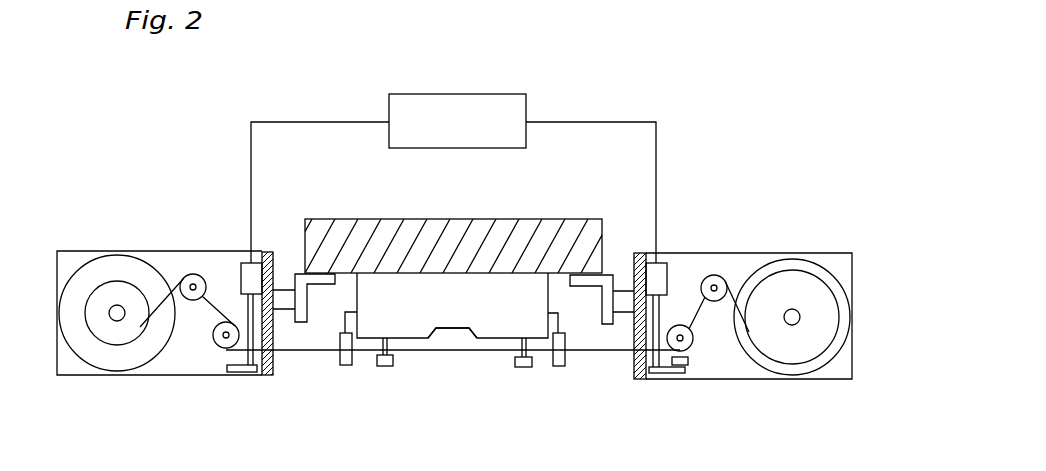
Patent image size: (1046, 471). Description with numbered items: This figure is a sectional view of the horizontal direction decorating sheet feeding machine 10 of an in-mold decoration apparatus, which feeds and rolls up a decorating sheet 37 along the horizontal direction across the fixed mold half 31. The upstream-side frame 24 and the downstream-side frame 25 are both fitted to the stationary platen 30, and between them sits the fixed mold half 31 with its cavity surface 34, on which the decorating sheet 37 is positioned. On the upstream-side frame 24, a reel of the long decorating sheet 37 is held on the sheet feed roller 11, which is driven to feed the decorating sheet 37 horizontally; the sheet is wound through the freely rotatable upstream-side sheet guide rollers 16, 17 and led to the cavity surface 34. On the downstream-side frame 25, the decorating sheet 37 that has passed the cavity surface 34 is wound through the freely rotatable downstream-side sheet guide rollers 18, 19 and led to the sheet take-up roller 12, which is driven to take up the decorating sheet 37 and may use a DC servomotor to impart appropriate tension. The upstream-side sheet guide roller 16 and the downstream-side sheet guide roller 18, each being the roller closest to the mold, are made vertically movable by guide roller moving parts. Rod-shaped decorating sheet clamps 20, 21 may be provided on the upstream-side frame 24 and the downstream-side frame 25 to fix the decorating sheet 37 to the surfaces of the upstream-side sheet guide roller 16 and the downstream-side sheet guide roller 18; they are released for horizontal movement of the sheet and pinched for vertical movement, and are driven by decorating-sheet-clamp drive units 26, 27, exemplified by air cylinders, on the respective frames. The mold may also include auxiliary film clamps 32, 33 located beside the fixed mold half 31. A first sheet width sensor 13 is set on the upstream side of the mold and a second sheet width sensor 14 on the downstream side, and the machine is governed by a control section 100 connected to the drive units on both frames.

The horizontal direction decorating sheet feeding machine 10 is at (704, 168).
The control section 100 is at (517, 100).
The sheet feed roller 11 is at (817, 270).
The sheet take-up roller 12 is at (93, 265).
The first sheet width sensor 13 is at (558, 367).
The second sheet width sensor 14 is at (345, 367).
The upstream-side sheet guide roller 16 is at (693, 348).
The upstream-side sheet guide roller 17 is at (710, 276).
The downstream-side sheet guide roller 18 is at (232, 322).
The downstream-side sheet guide roller 19 is at (195, 273).
The decorating sheet clamp 20 is at (678, 373).
The decorating sheet clamp 21 is at (227, 378).
The upstream-side frame 24 is at (827, 379).
The downstream-side frame 25 is at (78, 375).
The decorating-sheet-clamp drive unit 26 is at (650, 253).
The decorating-sheet-clamp drive unit 27 is at (262, 252).
The stationary platen 30 is at (360, 218).
The fixed mold half 31 is at (527, 287).
The film clamp 32 is at (522, 368).
The film clamp 33 is at (385, 367).
The cavity surface 34 is at (448, 333).
The decorating sheet 37 is at (600, 352).